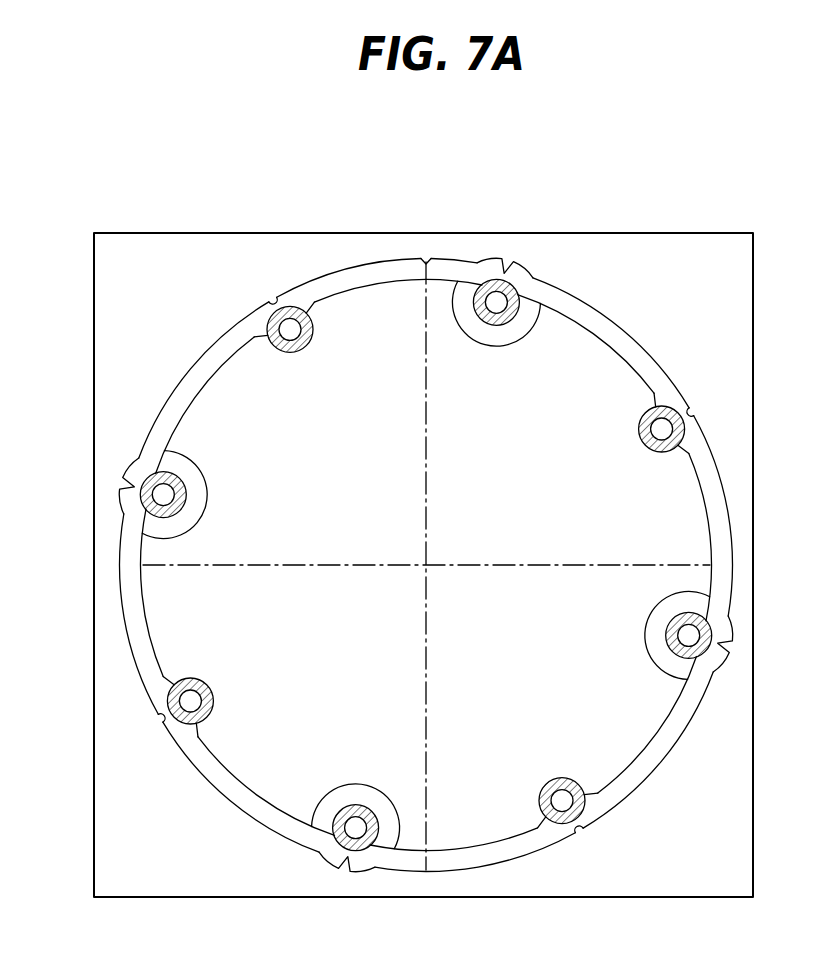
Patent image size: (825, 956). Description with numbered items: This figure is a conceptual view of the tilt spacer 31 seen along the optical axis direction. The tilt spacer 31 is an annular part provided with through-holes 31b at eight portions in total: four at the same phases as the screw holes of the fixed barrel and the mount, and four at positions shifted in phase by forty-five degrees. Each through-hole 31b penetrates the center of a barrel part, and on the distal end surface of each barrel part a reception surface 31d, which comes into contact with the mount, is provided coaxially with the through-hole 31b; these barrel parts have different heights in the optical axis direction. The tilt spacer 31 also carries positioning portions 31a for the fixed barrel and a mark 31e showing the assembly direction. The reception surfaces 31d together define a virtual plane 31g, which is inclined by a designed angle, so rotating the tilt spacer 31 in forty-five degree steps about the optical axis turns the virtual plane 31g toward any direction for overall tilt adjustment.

The tilt spacer 31 is at (362, 266).
The positioning portions 31a is at (503, 268).
The through-holes 31b is at (283, 329).
The reception surfaces 31d is at (297, 352).
The mark 31e is at (425, 259).
The virtual plane 31g is at (700, 233).